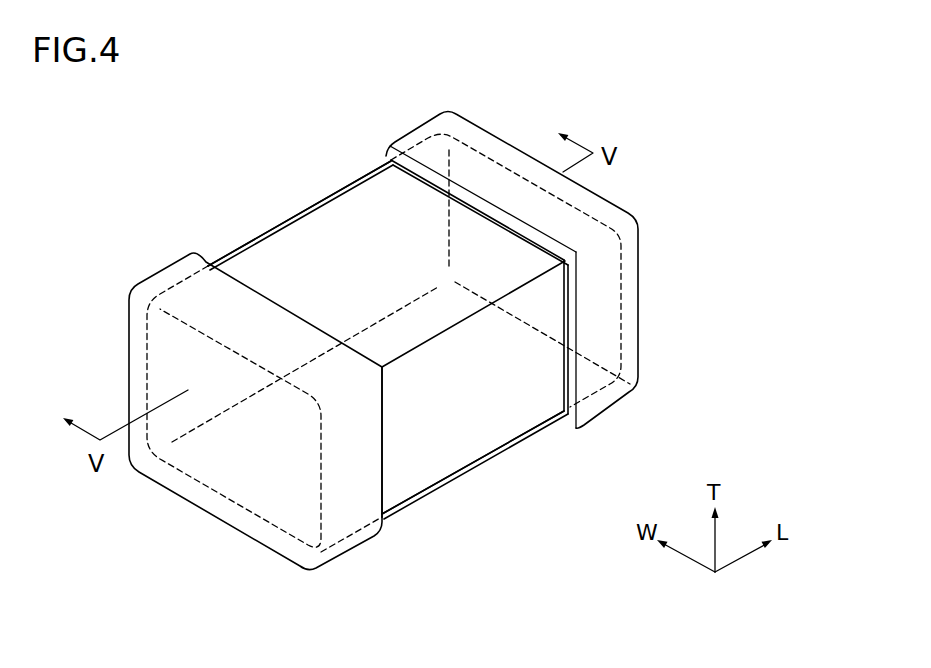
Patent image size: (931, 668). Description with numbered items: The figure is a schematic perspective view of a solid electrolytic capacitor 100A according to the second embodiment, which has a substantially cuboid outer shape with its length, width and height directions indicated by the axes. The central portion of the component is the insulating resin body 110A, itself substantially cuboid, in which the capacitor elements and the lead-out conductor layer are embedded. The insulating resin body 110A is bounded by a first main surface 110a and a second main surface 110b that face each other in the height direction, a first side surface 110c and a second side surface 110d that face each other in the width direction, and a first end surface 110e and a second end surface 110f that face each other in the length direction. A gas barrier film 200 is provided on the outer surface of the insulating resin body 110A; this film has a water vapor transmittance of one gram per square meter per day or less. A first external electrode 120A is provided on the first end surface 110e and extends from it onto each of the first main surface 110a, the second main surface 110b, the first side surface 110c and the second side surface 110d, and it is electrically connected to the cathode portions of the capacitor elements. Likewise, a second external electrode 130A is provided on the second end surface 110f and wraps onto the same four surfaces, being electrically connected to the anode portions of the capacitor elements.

The solid electrolytic capacitor 100A is at (140, 181).
The insulating resin body 110A is at (310, 235).
The first main surface 110a is at (460, 222).
The second main surface 110b is at (523, 408).
The first side surface 110c is at (403, 478).
The second side surface 110d is at (378, 195).
The first end surface 110e is at (153, 387).
The second end surface 110f is at (603, 289).
The first external electrode 120A is at (137, 338).
The second external electrode 130A is at (600, 207).
The gas barrier film 200 is at (236, 246).